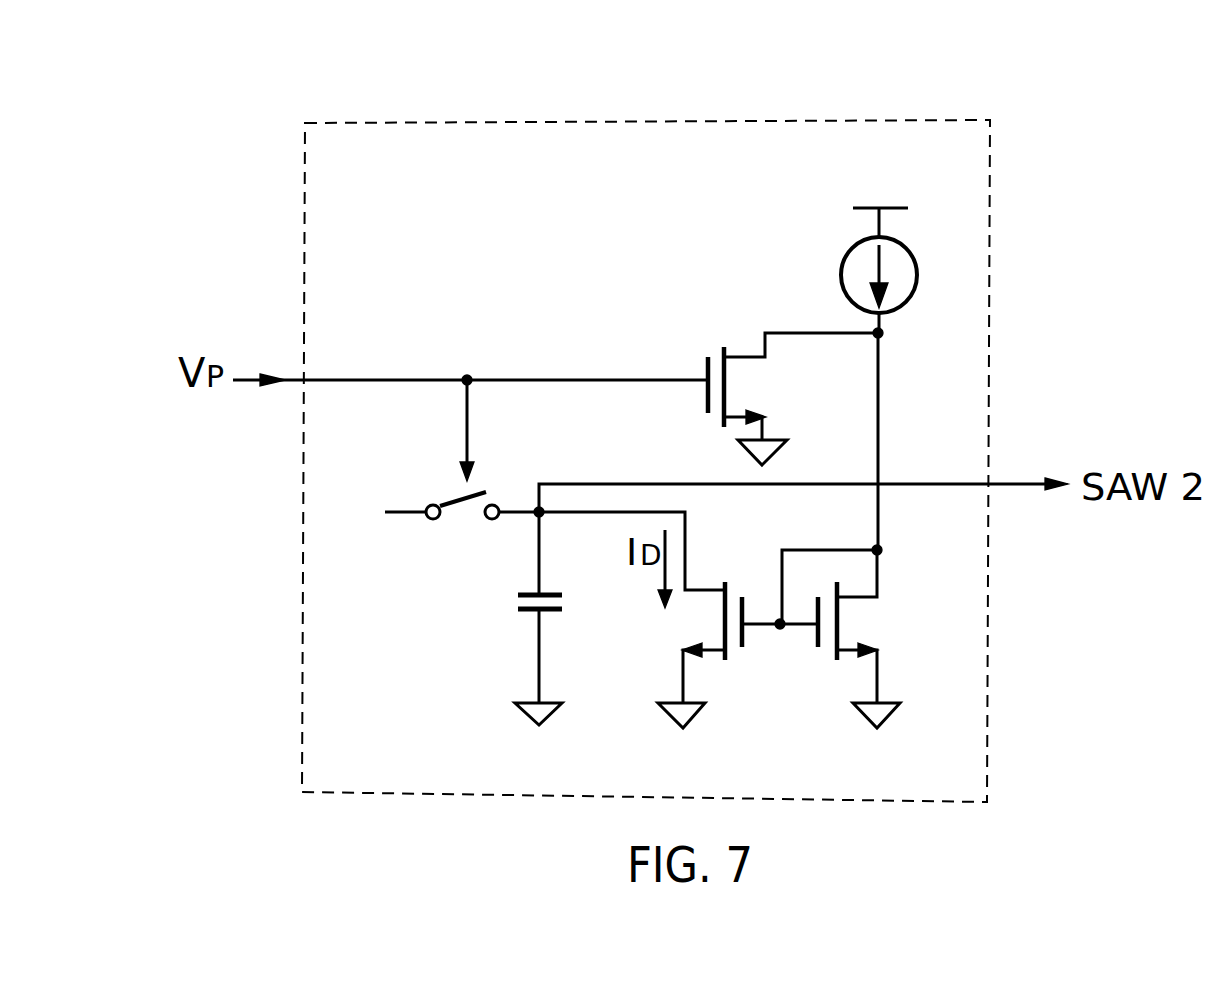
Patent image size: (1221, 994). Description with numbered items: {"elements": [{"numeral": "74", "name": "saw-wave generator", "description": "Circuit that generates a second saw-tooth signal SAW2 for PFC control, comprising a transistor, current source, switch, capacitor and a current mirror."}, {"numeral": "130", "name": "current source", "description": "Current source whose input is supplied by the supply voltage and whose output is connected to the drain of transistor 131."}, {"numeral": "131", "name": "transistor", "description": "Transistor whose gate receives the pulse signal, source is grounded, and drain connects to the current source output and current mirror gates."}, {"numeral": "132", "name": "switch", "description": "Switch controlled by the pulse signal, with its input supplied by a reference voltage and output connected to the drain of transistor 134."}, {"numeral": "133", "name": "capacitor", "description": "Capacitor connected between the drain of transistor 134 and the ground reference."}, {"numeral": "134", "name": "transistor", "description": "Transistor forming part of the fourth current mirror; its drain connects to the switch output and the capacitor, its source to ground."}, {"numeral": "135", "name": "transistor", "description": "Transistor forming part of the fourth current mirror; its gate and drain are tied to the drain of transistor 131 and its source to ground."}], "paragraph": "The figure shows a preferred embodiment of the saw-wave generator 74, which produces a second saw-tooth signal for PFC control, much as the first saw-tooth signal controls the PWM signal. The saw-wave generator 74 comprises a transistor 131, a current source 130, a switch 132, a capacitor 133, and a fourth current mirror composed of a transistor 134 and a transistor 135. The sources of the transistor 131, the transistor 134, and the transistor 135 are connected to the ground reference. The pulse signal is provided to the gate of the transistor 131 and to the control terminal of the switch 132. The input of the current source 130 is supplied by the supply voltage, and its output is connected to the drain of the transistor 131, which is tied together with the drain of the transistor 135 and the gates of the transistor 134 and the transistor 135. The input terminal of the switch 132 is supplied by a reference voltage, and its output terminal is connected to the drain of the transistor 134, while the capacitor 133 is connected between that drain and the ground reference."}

The sawtooth wave generating circuit 74 is at (1078, 96).
The constant current source 130 is at (838, 248).
The transistor 131 is at (705, 350).
The switch 132 is at (457, 527).
The capacitor 133 is at (508, 605).
The transistor 134 is at (732, 660).
The transistor 135 is at (877, 622).